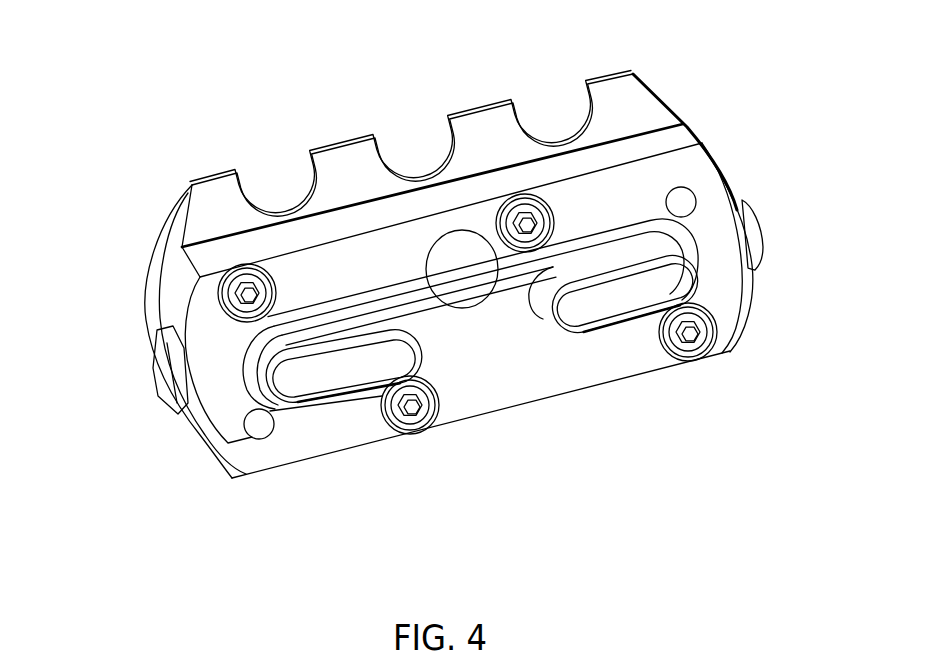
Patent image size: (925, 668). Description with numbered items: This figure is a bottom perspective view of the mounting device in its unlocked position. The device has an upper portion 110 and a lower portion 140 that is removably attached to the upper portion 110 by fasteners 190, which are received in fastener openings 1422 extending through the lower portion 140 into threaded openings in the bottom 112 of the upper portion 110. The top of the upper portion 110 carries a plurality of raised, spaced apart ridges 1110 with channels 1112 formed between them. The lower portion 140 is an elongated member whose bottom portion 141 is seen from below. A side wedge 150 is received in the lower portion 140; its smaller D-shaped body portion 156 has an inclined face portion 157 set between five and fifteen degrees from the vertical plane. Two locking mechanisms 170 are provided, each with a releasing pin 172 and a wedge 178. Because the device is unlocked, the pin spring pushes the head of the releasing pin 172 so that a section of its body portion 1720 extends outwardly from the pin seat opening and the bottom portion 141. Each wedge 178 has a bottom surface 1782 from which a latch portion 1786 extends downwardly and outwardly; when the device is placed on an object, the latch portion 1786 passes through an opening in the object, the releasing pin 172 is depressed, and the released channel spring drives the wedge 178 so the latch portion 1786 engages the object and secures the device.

The upper portion 110 is at (660, 83).
The bottom 112 is at (668, 122).
The lower portion 140 is at (377, 445).
The bottom portion 141 is at (613, 357).
The side wedge 150 is at (475, 306).
The body portion 156 is at (464, 231).
The inclined face portion 157 is at (452, 268).
The locking mechanism 170 is at (163, 360).
The releasing pin 172 is at (684, 190).
The wedge 178 is at (757, 205).
The fastener 190 is at (556, 226).
The ridge 1110 is at (505, 103).
The channel 1112 is at (570, 133).
The fastener opening 1422 is at (262, 345).
The body portion 1720 is at (697, 207).
The bottom surface 1782 is at (172, 368).
The latch portion 1786 is at (325, 378).